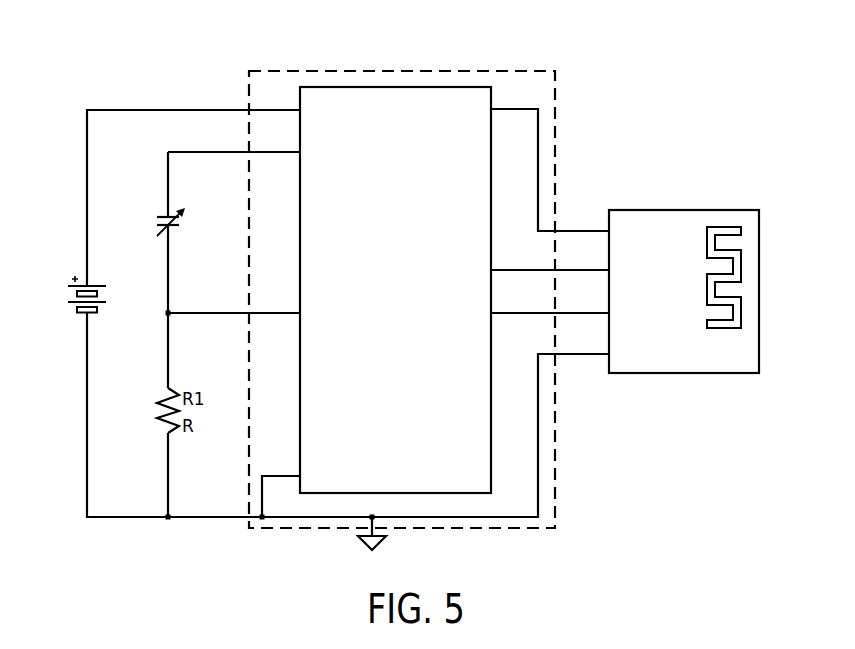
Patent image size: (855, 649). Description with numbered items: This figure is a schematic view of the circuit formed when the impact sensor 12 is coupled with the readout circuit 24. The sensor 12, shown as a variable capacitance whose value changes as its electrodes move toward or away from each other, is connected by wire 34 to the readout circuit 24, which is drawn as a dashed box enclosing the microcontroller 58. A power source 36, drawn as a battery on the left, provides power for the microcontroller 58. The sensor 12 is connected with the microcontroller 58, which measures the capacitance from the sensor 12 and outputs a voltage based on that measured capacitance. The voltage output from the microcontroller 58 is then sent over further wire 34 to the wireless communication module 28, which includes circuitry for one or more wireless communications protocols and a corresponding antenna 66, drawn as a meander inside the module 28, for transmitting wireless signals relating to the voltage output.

The impact sensor 12 is at (187, 224).
The readout circuit 24 is at (447, 71).
The wireless communication module 28 is at (658, 220).
The wire 34 is at (155, 110).
The power source 36 is at (62, 306).
The microcontroller 58 is at (406, 305).
The antenna 66 is at (736, 264).